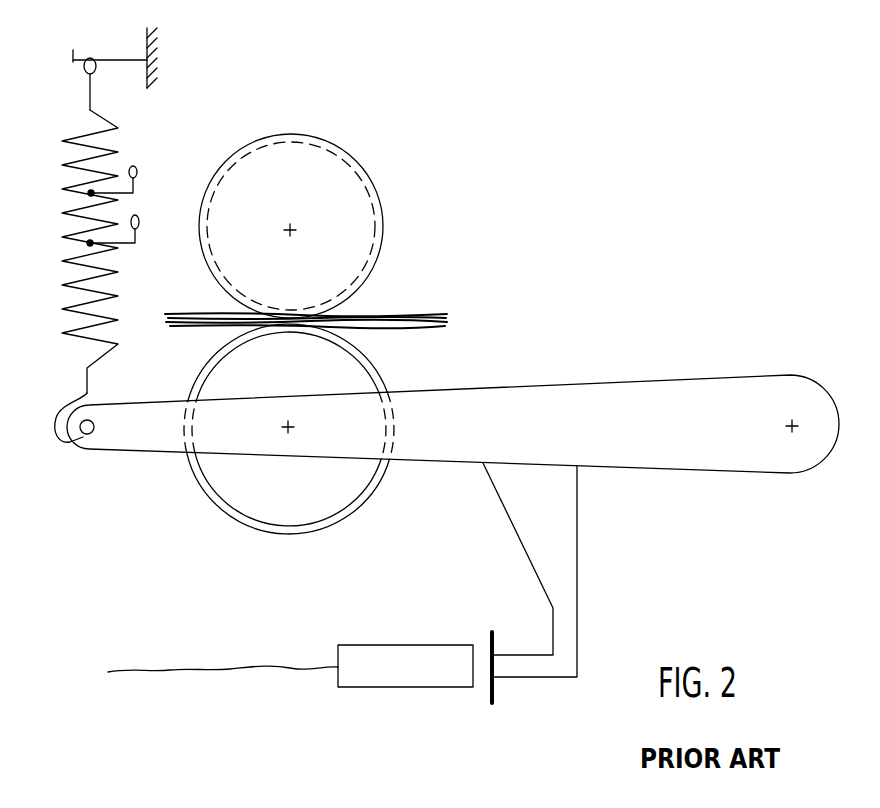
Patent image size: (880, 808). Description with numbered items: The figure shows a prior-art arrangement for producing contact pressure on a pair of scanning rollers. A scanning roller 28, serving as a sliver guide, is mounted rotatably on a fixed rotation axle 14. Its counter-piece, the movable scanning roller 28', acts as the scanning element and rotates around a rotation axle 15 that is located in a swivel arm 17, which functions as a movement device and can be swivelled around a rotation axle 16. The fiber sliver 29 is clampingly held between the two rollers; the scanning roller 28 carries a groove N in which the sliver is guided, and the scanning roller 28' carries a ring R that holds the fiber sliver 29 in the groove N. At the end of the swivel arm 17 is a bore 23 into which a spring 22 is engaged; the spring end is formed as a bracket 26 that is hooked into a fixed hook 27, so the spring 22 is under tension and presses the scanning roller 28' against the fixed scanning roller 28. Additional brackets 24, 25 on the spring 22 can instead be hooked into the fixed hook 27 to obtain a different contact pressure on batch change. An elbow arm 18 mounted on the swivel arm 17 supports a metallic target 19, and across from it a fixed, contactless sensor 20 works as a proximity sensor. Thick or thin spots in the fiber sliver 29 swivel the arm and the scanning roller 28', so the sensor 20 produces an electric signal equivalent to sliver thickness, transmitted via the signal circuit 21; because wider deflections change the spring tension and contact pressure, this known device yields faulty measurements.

The rotation axle 14 is at (292, 229).
The rotation axle 15 is at (297, 428).
The rotation axle 16 is at (785, 426).
The swivel arm 17 is at (618, 378).
The elbow arm 18 is at (572, 536).
The target 19 is at (491, 632).
The sensor 20 is at (368, 645).
The signal circuit 21 is at (178, 668).
The spring 22 is at (62, 240).
The bore 23 is at (95, 427).
The bracket 24 is at (138, 213).
The bracket 25 is at (137, 167).
The bracket 26 is at (83, 68).
The fixed hook 27 is at (117, 58).
The scanning roller 28 is at (291, 201).
The scanning roller 28' is at (269, 444).
The fiber sliver 29 is at (380, 312).
The groove N is at (384, 202).
The ring R is at (373, 482).